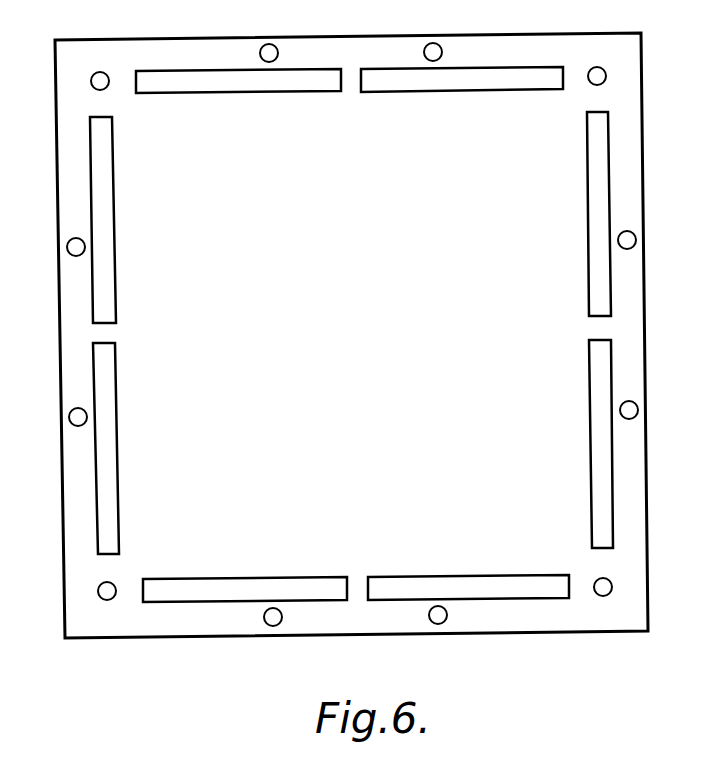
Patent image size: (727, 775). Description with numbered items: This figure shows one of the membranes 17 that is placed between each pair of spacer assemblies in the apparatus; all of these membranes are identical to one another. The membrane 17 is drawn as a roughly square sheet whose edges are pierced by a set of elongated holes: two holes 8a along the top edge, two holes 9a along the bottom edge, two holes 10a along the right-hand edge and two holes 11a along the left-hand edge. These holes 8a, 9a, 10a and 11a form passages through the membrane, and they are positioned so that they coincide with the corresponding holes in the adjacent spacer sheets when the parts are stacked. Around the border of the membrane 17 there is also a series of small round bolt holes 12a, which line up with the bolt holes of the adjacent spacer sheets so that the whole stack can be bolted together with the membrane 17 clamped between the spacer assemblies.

The hole 8a is at (300, 80).
The hole 9a is at (218, 592).
The hole 10a is at (598, 157).
The hole 11a is at (106, 299).
The bolt hole 12a is at (629, 410).
The membrane 17 is at (645, 443).